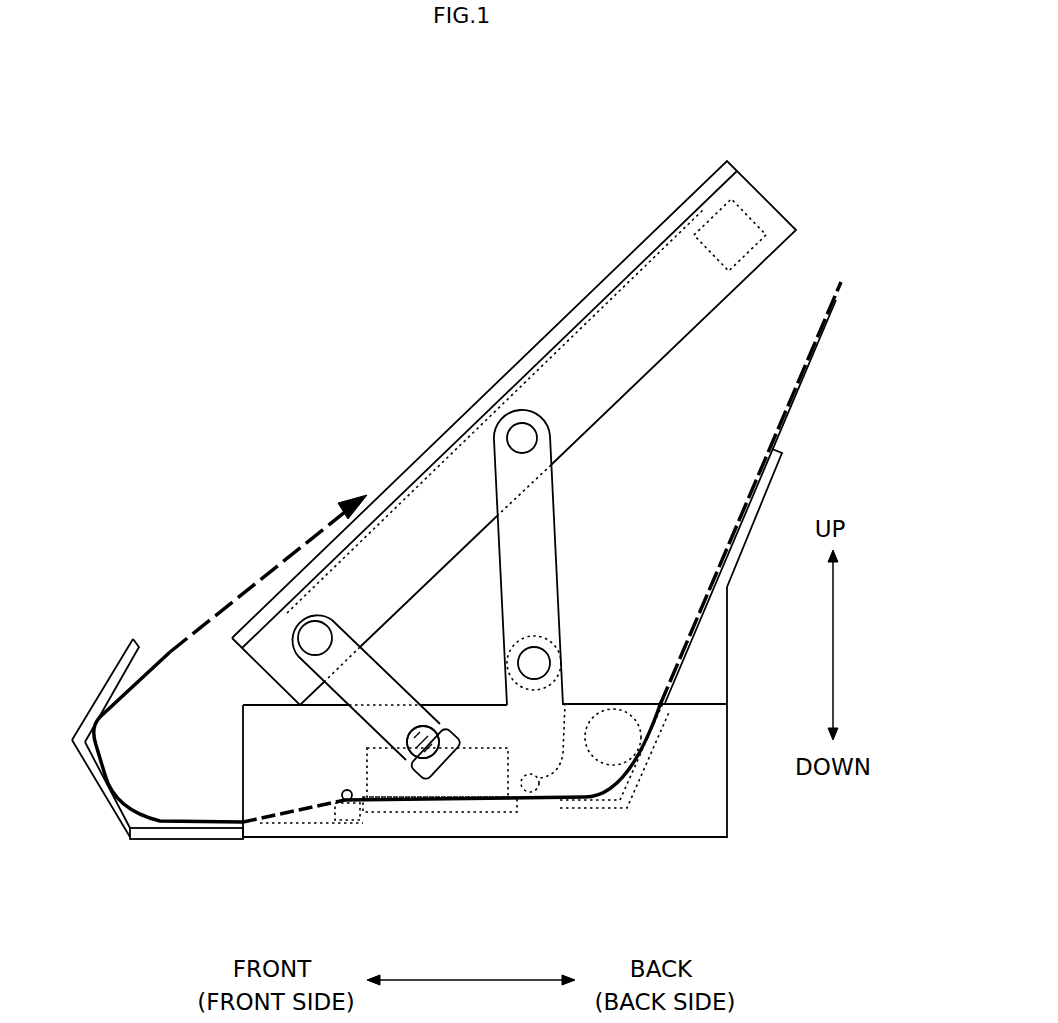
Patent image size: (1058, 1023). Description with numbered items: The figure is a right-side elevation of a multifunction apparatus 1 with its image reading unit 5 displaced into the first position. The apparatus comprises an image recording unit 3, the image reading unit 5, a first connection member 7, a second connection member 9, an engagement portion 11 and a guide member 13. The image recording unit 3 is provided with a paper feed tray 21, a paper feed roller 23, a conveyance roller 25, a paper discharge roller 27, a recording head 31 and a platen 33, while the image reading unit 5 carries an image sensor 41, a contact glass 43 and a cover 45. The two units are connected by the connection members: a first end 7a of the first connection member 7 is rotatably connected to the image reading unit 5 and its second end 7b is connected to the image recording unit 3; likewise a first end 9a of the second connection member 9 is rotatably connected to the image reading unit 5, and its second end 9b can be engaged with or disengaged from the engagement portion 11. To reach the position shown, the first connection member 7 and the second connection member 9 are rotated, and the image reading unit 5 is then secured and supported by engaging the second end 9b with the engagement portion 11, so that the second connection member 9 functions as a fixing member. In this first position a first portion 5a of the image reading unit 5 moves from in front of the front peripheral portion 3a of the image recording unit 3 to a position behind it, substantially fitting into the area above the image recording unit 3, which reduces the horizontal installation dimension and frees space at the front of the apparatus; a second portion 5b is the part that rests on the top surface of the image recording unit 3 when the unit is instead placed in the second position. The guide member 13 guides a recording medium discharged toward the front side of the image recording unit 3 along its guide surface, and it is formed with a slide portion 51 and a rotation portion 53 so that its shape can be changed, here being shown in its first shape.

The multifunction apparatus 1 is at (593, 153).
The image recording unit 3 is at (657, 824).
The front peripheral portion 3a is at (245, 706).
The image reading unit 5 is at (748, 197).
The first portion of the image reading unit 5a is at (415, 513).
The second portion of the image reading unit 5b is at (655, 282).
The first connection member 7 is at (543, 543).
The first end of the first connection member 7a is at (518, 438).
The second end of the first connection member 7b is at (534, 663).
The second connection member 9 is at (372, 667).
The first end of the second connection member 9a is at (317, 633).
The second end of the second connection member 9b is at (423, 742).
The engagement portion 11 is at (423, 742).
The guide member 13 is at (105, 660).
The paper feed tray 21 is at (780, 450).
The paper feed roller 23 is at (627, 707).
The conveyance roller 25 is at (565, 703).
The paper discharge roller 27 is at (348, 805).
The recording head 31 is at (367, 750).
The platen 33 is at (443, 815).
The image sensor 41 is at (770, 220).
The contact glass 43 is at (592, 320).
The cover 45 is at (472, 408).
The slide portion 51 is at (168, 835).
The rotation portion 53 is at (93, 782).